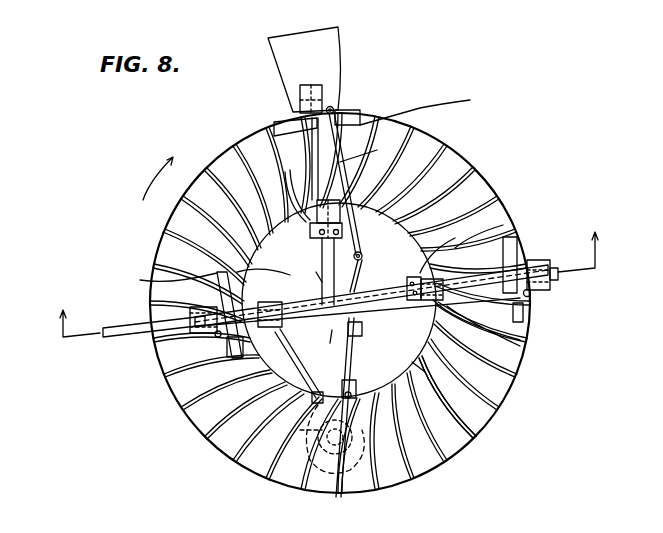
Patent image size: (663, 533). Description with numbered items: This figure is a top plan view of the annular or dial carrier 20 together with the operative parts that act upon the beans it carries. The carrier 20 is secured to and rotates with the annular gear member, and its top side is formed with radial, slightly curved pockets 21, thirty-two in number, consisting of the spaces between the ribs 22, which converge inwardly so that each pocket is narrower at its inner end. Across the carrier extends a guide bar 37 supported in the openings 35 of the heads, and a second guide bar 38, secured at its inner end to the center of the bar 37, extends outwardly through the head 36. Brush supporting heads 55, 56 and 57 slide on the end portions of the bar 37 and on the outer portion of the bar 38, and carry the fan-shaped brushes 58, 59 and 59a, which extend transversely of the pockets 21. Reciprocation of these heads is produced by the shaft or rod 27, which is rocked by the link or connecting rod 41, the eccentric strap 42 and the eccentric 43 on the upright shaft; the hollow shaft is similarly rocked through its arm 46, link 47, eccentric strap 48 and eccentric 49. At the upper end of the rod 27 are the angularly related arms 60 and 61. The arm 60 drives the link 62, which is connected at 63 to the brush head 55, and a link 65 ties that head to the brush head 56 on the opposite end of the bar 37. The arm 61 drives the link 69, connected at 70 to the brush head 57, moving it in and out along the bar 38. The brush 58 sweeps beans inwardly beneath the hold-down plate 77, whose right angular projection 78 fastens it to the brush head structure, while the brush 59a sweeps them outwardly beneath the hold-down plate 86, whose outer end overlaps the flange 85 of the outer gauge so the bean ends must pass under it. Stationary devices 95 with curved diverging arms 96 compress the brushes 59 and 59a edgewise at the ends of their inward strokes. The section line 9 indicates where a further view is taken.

The annular or dial carrier 20 is at (461, 458).
The pockets 21 is at (473, 420).
The ribs 22 is at (500, 403).
The shaft or rod 27 is at (307, 266).
The openings 35 is at (453, 325).
The head 36 is at (372, 198).
The guide bar 37 is at (505, 227).
The guide bar 38 is at (273, 123).
The link or connecting rod 41 is at (308, 372).
The eccentric strap 42 is at (297, 432).
The eccentric 43 is at (262, 465).
The arm 46 is at (432, 376).
The link or connecting rod 47 is at (355, 368).
The eccentric strap 48 is at (380, 423).
The eccentric 49 is at (387, 442).
The brush supporting head 55 is at (190, 312).
The brush supporting head 56 is at (547, 287).
The brush supporting head 57 is at (322, 92).
The brush 58 is at (203, 280).
The brush 59 is at (505, 243).
The brush 59a is at (422, 97).
The arm 60 is at (370, 293).
The arm 61 is at (363, 243).
The link 62 is at (333, 348).
The connection 63 is at (215, 335).
The link 65 is at (400, 312).
The link 69 is at (373, 150).
The connection 70 is at (358, 117).
The hold-down plate 77 is at (270, 270).
The right angular projection 78 is at (243, 287).
The flange 85 is at (482, 528).
The hold-down plate 86 is at (328, 42).
The devices 95 is at (312, 232).
The curved diverging arms 96 is at (290, 177).
The section line 9 is at (331, 298).